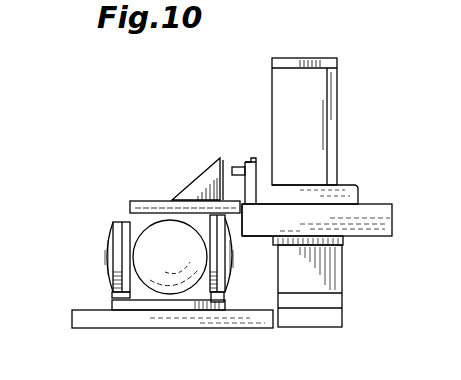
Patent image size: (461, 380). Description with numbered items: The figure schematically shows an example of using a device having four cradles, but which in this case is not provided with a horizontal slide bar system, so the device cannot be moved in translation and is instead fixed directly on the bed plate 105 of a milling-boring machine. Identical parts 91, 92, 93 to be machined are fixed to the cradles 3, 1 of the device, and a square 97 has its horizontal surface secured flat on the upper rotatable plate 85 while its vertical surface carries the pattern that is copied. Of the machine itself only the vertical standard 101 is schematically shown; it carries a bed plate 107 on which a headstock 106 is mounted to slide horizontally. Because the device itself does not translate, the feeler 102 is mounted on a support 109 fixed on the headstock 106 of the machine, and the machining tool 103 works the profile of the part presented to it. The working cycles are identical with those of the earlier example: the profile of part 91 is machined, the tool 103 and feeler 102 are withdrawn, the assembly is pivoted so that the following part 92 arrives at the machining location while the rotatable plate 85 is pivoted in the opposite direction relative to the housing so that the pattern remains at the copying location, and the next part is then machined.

The cradle 1 is at (121, 222).
The cradle 3 is at (230, 300).
The upper rotatable plate 85 is at (148, 201).
The part 91 is at (237, 266).
The part 92 is at (157, 278).
The part 93 is at (108, 246).
The square 97 is at (212, 180).
The vertical standard 101 is at (328, 115).
The feeler 102 is at (233, 167).
The machining tool 103 is at (244, 219).
The bed plate 105 is at (80, 316).
The headstock 106 is at (393, 218).
The bed plate 107 is at (345, 188).
The support 109 is at (253, 178).